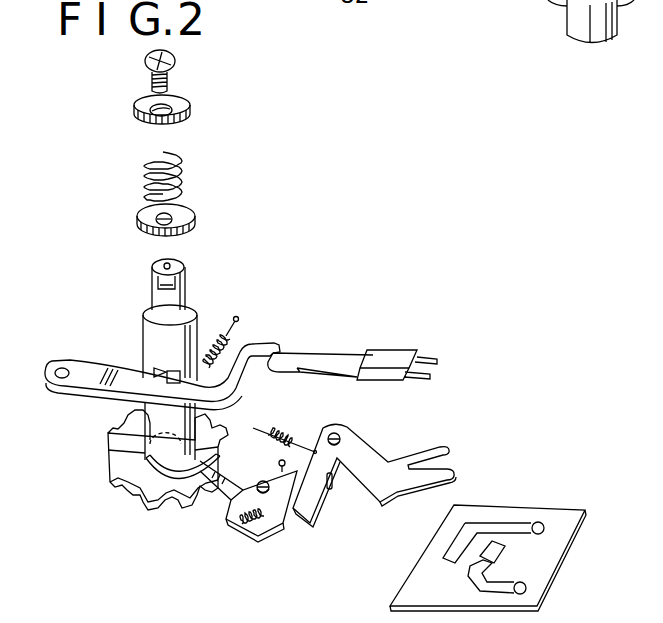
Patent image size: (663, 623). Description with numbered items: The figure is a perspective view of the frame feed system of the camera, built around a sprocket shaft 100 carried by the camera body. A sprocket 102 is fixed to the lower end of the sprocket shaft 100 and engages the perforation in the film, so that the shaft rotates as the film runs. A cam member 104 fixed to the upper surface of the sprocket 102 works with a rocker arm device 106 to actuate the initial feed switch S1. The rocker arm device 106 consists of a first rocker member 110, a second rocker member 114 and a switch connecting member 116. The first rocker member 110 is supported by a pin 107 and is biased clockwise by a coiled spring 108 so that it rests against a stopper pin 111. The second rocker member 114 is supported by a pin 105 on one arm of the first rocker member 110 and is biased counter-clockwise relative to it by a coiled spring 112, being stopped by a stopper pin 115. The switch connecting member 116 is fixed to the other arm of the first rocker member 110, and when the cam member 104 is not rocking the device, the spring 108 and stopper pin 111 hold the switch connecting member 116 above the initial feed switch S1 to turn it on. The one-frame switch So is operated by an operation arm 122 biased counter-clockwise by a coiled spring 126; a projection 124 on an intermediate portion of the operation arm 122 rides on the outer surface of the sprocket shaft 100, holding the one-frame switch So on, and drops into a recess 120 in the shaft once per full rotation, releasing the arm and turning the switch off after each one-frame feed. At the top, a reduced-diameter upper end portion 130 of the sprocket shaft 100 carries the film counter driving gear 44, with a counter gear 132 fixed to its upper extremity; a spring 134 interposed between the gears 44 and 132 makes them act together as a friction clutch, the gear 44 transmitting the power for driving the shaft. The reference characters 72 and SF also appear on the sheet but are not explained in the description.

The counter gear 132 is at (191, 108).
The spring 134 is at (182, 182).
The film counter driving gear 44 is at (184, 219).
The reduced-diameter upper end portion 130 is at (172, 302).
The sprocket shaft 100 is at (153, 340).
The recess 120 is at (146, 375).
The projection 124 is at (172, 372).
The coiled spring 126 is at (233, 343).
The operation arm 122 is at (90, 378).
The one-frame switch So is at (396, 357).
The sprocket 102 is at (130, 470).
The cam member 104 is at (193, 470).
The pin 105 is at (293, 500).
The second rocker member 114 is at (285, 517).
The coiled spring 112 is at (243, 535).
The stopper pin 115 is at (280, 462).
The coiled spring 108 is at (280, 427).
The pin 107 is at (340, 433).
The rocker arm device 106 is at (321, 505).
The first rocker member 110 is at (380, 439).
The switch connecting member 116 is at (437, 447).
The stopper pin 111 is at (333, 481).
The initial feed switch S1 is at (546, 562).
The shaft 72 is at (558, 21).
The switch SF is at (424, 0).